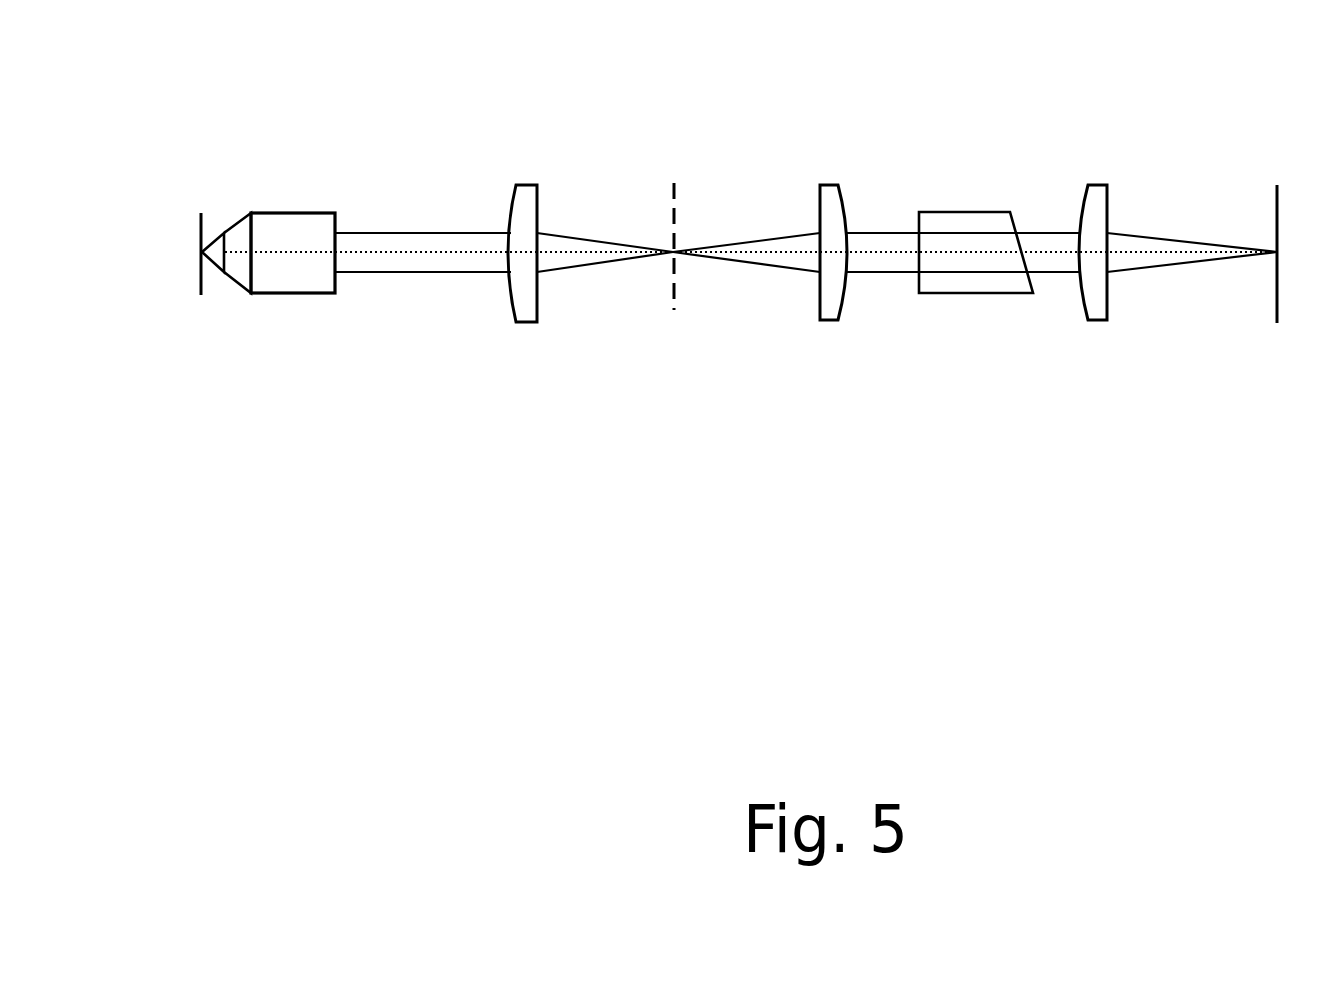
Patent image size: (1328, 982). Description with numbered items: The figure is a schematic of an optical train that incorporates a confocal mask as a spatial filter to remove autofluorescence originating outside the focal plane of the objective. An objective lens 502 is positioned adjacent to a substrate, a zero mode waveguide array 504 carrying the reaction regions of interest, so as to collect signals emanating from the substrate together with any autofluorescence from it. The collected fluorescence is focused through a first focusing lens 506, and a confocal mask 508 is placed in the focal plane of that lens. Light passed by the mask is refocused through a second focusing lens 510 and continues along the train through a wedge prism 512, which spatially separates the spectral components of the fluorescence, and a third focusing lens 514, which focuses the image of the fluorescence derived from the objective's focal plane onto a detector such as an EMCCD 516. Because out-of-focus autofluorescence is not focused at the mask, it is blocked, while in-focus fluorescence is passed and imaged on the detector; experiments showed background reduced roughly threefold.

The objective lens 502 is at (294, 316).
The zero mode waveguide array 504 is at (192, 195).
The first focusing lens 506 is at (522, 342).
The confocal mask 508 is at (665, 165).
The second focusing lens 510 is at (831, 341).
The wedge prism 512 is at (974, 192).
The third focusing lens 514 is at (1096, 342).
The EMCCD 516 is at (1277, 165).